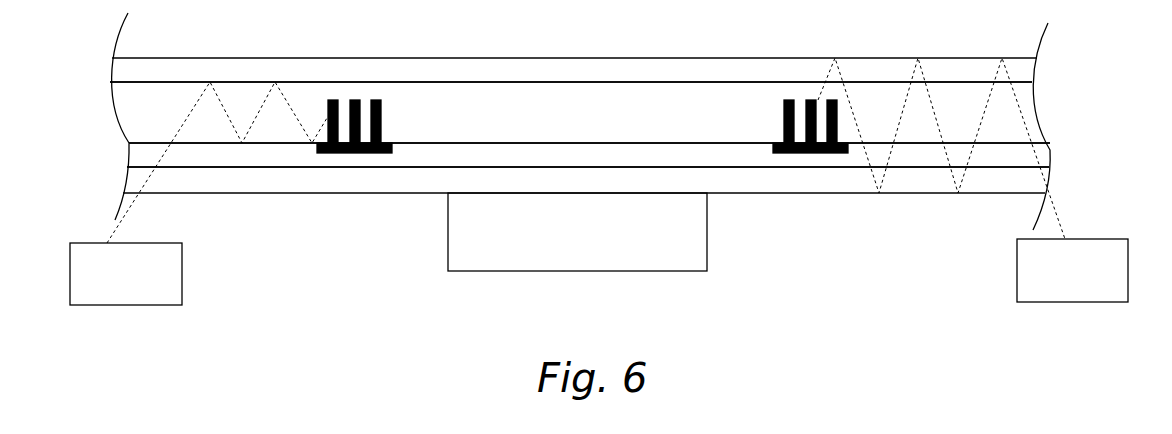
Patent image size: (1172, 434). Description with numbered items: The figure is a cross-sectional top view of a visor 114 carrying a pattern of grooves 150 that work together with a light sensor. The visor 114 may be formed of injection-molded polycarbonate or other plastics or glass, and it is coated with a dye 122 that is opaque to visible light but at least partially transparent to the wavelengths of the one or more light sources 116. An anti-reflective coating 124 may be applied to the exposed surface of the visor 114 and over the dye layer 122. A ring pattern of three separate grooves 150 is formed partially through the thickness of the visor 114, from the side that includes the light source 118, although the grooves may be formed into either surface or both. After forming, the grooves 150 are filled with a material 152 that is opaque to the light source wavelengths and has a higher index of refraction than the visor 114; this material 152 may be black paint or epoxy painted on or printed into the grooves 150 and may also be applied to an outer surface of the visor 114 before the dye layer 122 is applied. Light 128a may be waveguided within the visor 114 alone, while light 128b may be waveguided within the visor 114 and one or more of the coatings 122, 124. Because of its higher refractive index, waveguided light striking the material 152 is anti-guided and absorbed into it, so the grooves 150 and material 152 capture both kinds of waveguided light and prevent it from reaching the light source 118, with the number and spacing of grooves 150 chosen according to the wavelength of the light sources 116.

The visor 114 is at (652, 105).
The light sources 116 is at (599, 272).
The light source 118 is at (577, 232).
The dye 122 is at (712, 158).
The anti-reflective coating 124 is at (548, 73).
The light 128a is at (220, 105).
The light 128b is at (930, 97).
The grooves 150 is at (582, 81).
The material 152 is at (382, 110).